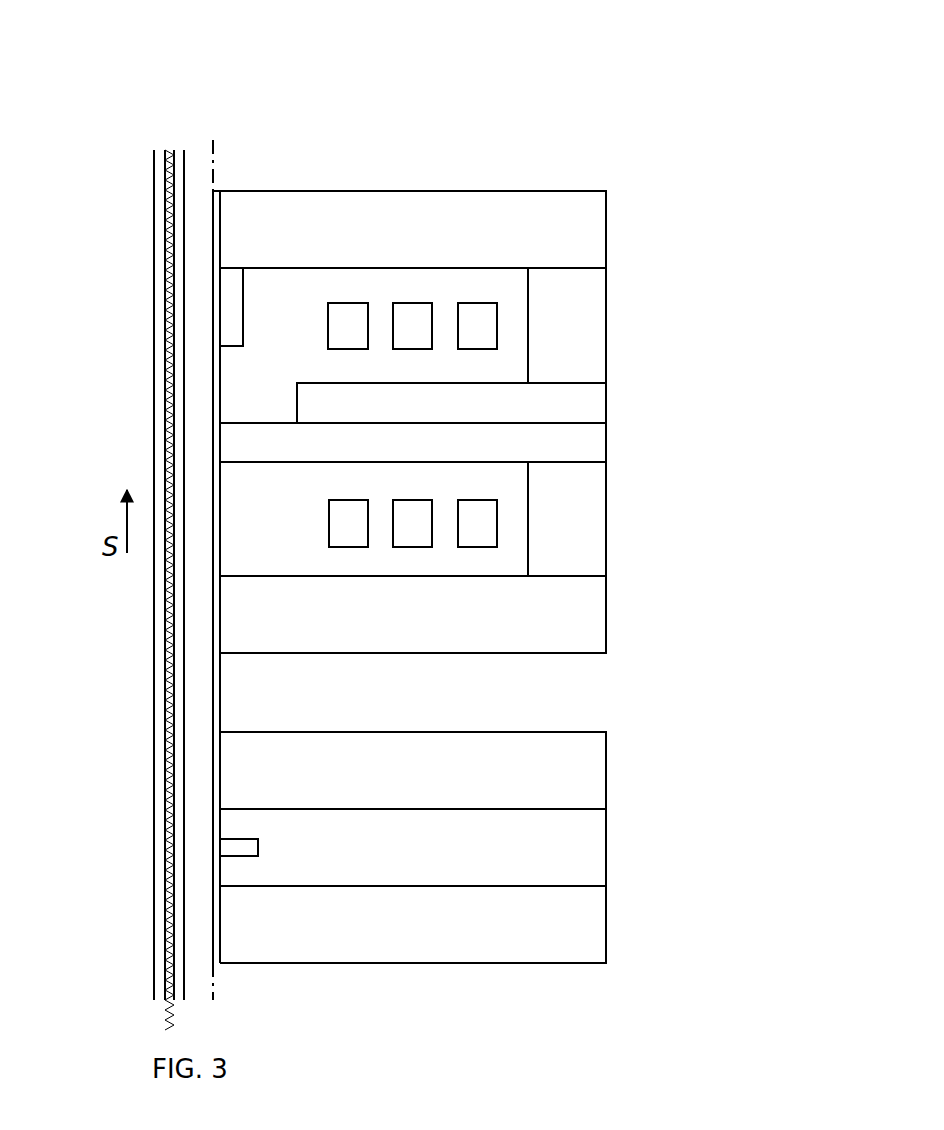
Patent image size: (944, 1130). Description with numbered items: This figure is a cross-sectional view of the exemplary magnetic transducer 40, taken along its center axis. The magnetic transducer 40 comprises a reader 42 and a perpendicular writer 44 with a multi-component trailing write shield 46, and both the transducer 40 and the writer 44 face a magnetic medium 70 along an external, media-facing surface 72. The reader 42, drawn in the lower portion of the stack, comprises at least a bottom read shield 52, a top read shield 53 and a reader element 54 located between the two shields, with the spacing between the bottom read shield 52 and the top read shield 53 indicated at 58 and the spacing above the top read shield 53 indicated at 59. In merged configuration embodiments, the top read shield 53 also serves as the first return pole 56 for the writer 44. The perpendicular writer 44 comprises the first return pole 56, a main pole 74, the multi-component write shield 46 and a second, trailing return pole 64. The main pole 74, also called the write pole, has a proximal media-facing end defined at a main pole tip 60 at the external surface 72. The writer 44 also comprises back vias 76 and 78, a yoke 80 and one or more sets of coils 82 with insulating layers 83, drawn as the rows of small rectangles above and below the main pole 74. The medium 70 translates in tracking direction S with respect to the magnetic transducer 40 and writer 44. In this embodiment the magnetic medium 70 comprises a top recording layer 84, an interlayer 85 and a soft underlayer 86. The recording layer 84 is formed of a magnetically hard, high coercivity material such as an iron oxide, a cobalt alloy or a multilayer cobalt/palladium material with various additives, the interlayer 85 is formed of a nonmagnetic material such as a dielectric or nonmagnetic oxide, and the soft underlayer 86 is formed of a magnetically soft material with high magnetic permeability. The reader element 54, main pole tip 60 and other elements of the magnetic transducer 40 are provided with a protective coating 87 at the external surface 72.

The magnetic transducer 40 is at (742, 74).
The reader 42 is at (662, 732).
The perpendicular writer 44 is at (662, 192).
The multi-component trailing write shield 46 is at (232, 278).
The bottom read shield 52 is at (543, 950).
The top read shield 53 is at (247, 742).
The reader element 54 is at (252, 849).
The first return pole 56 is at (597, 618).
The gap 58 is at (600, 852).
The gap 59 is at (600, 688).
The main pole tip 60 is at (228, 442).
The second (trailing) return pole 64 is at (538, 204).
The magnetic medium 70 is at (144, 140).
The external (media-facing) surface 72 is at (213, 140).
The main pole 74 is at (597, 440).
The back via 76 is at (585, 520).
The back via 78 is at (585, 313).
The yoke 80 is at (597, 405).
The coils 82 is at (338, 326).
The insulating layers 83 is at (280, 390).
The top recording layer 84 is at (178, 212).
The interlayer 85 is at (170, 273).
The soft underlayer (SUL) 86 is at (158, 338).
The protective coating 87 is at (213, 190).